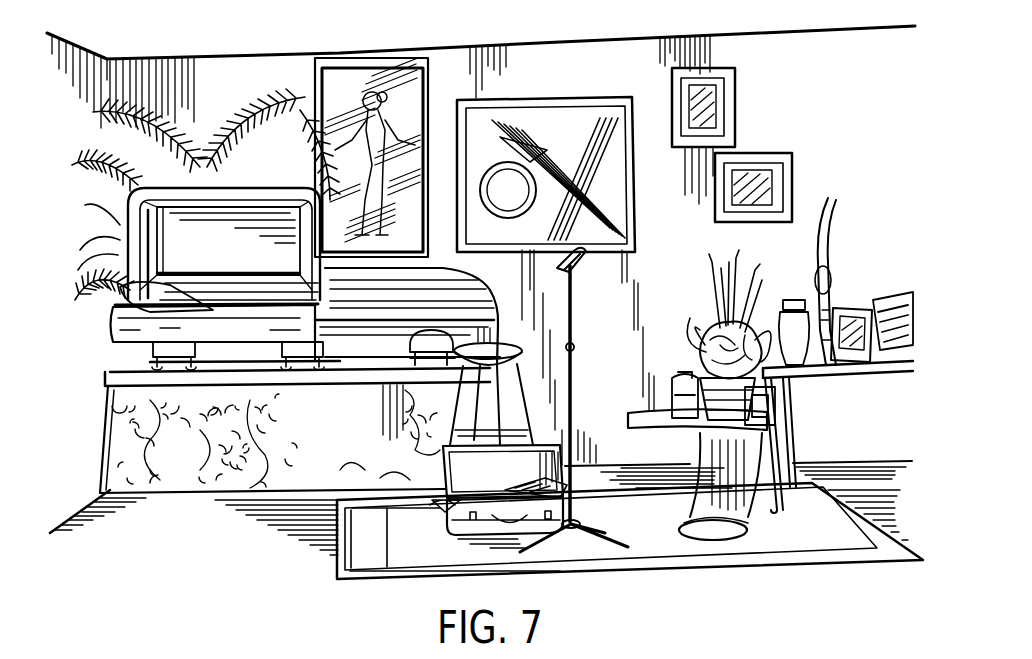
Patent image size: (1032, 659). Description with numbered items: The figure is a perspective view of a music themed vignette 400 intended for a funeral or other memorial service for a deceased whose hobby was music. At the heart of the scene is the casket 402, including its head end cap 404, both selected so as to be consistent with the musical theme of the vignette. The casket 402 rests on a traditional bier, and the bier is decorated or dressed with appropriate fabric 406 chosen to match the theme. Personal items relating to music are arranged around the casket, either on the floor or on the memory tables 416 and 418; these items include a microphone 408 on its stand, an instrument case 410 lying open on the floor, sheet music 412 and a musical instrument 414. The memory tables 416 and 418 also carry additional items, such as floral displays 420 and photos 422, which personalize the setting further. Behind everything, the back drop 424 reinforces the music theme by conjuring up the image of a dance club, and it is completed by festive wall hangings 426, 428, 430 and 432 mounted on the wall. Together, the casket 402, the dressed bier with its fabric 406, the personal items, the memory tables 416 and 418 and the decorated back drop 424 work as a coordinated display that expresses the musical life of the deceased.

The vignette 400 is at (299, 608).
The casket 402 is at (110, 357).
The head end cap 404 is at (200, 238).
The fabric 406 is at (117, 483).
The microphone 408 is at (580, 253).
The instrument case 410 is at (440, 520).
The sheet music 412 is at (517, 497).
The musical instrument 414 is at (830, 197).
The memory table 416 is at (727, 515).
The memory table 418 is at (833, 375).
The floral display 420 is at (683, 340).
The photo 422 is at (853, 313).
The back drop 424 is at (610, 73).
The wall hanging 426 is at (337, 78).
The wall hanging 428 is at (530, 113).
The wall hanging 430 is at (735, 65).
The wall hanging 432 is at (760, 163).